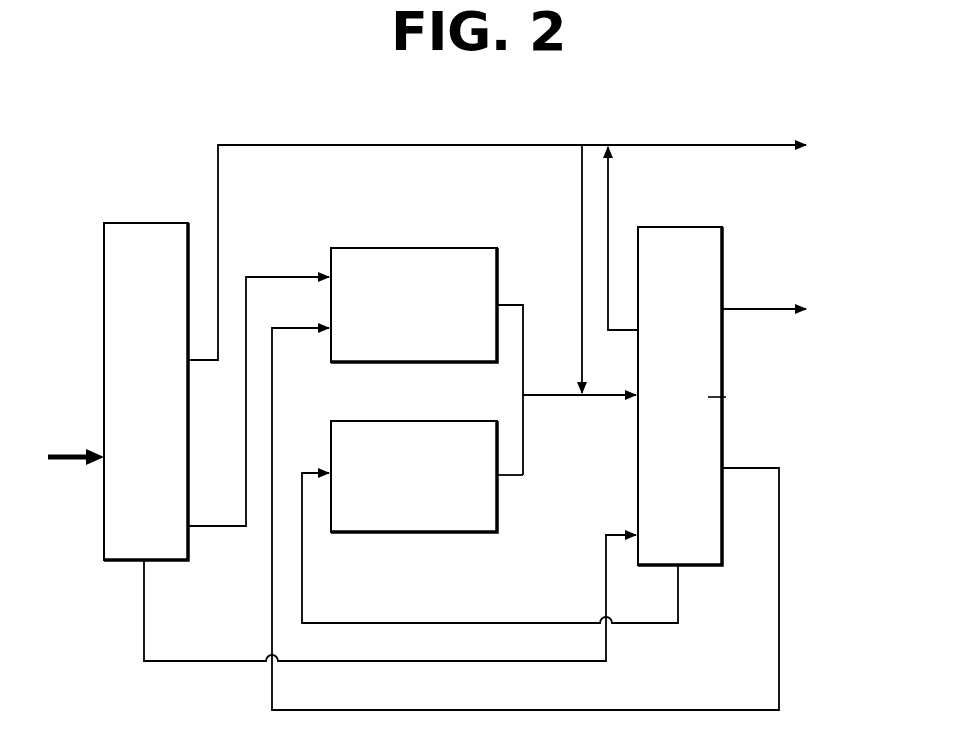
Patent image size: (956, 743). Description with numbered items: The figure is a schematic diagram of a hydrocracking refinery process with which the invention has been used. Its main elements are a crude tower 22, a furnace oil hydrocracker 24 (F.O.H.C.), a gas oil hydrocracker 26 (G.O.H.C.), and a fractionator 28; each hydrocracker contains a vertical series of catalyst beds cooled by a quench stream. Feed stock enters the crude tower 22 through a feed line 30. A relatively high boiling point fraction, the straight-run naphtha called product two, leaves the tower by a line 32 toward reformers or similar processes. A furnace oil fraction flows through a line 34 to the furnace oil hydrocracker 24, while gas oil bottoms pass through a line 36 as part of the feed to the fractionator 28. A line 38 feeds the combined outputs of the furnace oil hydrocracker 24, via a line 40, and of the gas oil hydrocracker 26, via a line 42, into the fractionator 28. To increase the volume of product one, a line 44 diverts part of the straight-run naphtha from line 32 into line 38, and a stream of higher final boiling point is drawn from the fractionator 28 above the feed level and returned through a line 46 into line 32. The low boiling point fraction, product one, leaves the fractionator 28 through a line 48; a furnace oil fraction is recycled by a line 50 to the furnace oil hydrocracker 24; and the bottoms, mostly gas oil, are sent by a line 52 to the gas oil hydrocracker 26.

The crude tower 22 is at (115, 240).
The furnace oil hydrocracker 24 is at (390, 260).
The gas oil hydrocracker 26 is at (382, 432).
The fractionator 28 is at (707, 237).
The feed line 30 is at (80, 452).
The straight-run naphtha line 32 is at (250, 143).
The furnace oil line 34 is at (240, 524).
The gas oil bottoms line 36 is at (196, 661).
The fractionator feed line 38 is at (556, 396).
The F.O.H.C. output line 40 is at (511, 305).
The G.O.H.C. output line 42 is at (510, 477).
The naphtha diversion line 44 is at (582, 251).
The higher boiling point return line 46 is at (608, 197).
The product 1 line 48 is at (792, 308).
The furnace oil recycle line 50 is at (780, 575).
The fractionator bottoms line 52 is at (470, 621).